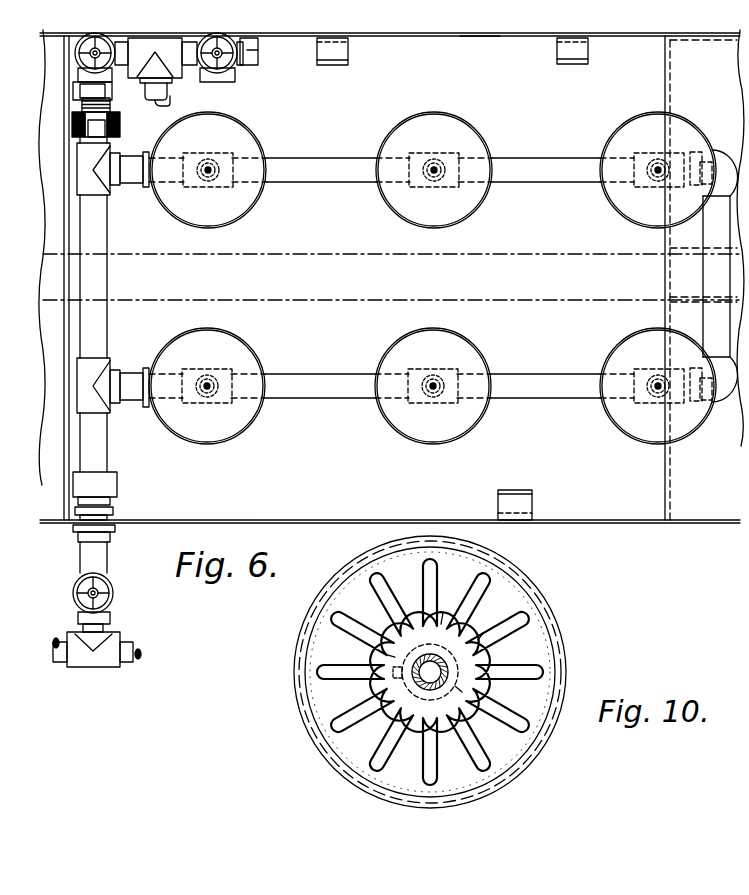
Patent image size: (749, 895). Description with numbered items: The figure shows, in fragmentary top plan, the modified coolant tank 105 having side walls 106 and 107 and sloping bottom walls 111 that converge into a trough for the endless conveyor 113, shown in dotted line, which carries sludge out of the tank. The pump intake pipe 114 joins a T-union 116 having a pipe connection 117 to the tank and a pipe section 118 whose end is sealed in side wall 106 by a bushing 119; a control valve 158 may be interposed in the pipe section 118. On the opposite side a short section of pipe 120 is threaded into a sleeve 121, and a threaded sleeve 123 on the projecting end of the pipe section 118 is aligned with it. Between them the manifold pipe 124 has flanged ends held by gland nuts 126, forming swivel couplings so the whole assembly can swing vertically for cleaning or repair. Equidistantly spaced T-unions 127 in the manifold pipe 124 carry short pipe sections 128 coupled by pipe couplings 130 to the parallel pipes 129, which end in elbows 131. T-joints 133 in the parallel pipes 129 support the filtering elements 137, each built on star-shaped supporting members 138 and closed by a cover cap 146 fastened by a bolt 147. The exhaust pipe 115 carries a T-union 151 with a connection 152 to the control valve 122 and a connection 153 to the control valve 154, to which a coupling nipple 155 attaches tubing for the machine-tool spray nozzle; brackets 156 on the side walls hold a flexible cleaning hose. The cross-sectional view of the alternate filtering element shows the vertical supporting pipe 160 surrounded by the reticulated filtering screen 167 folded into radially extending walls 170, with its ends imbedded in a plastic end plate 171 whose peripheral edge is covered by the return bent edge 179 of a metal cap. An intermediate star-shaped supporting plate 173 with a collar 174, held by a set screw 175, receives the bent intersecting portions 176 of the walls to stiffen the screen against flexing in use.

In FIG. 6, the coolant tank 105 is at (605, 526).
In FIG. 6, the side wall 106 is at (397, 518).
In FIG. 6, the side wall 107 is at (481, 38).
In FIG. 6, the sloping bottom walls 111 is at (418, 50).
In FIG. 6, the endless conveyor 113 is at (355, 251).
In FIG. 6, the intake pipe 114 is at (128, 638).
In FIG. 6, the exhaust pipe 115 is at (167, 93).
In FIG. 6, the T-union 116 is at (95, 660).
In FIG. 6, the pipe connection 117 is at (60, 637).
In FIG. 6, the pipe section 118 is at (98, 558).
In FIG. 6, the bushing 119 is at (107, 512).
In FIG. 6, the short section of pipe 120 is at (72, 100).
In FIG. 6, the sleeve 121 is at (111, 107).
In FIG. 6, the control valve 122 is at (73, 48).
In FIG. 6, the threaded sleeve 123 is at (103, 502).
In FIG. 6, the manifold pipe 124 is at (98, 238).
In FIG. 6, the gland nuts 126 is at (113, 125).
In FIG. 6, the T-unions 127 is at (85, 170).
In FIG. 6, the short pipe sections 128 is at (127, 157).
In FIG. 6, the parallel pipes 129 is at (327, 157).
In FIG. 6, the pipe couplings 130 is at (143, 195).
In FIG. 6, the elbows 131 is at (723, 166).
In FIG. 6, the T-joints 133 is at (190, 187).
In FIG. 6, the filtering element 137 is at (248, 221).
In FIG. 6, the star-shaped supporting member 138 is at (709, 289).
In FIG. 6, the cover cap 146 is at (238, 118).
In FIG. 6, the bolt 147 is at (208, 168).
In FIG. 6, the T-union 151 is at (153, 43).
In FIG. 6, the connection 152 is at (108, 35).
In FIG. 6, the connection 153 is at (200, 33).
In FIG. 6, the control valve 154 is at (243, 33).
In FIG. 6, the coupling nipple 155 is at (258, 53).
In FIG. 6, the brackets 156 is at (335, 67).
In FIG. 6, the control valve 158 is at (112, 577).
In FIG. 10, the vertical supporting pipe 160 is at (433, 653).
In FIG. 10, the reticulated filtering screen 167 is at (545, 670).
In FIG. 10, the radially extending walls 170 is at (520, 662).
In FIG. 10, the plastic end plate 171 is at (497, 588).
In FIG. 10, the star-shaped supporting plate 173 is at (462, 692).
In FIG. 10, the collar 174 is at (483, 633).
In FIG. 10, the set screw 175 is at (388, 655).
In FIG. 10, the bent intersecting portions 176 is at (443, 613).
In FIG. 10, the return bent peripheral edge 179 is at (537, 583).